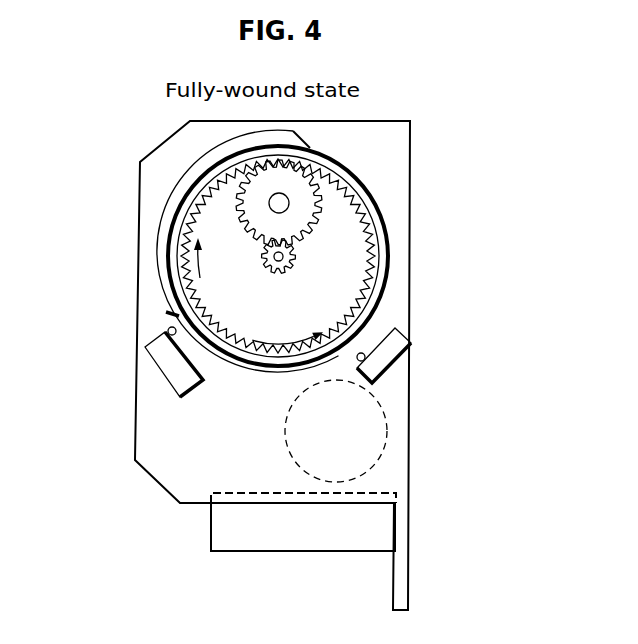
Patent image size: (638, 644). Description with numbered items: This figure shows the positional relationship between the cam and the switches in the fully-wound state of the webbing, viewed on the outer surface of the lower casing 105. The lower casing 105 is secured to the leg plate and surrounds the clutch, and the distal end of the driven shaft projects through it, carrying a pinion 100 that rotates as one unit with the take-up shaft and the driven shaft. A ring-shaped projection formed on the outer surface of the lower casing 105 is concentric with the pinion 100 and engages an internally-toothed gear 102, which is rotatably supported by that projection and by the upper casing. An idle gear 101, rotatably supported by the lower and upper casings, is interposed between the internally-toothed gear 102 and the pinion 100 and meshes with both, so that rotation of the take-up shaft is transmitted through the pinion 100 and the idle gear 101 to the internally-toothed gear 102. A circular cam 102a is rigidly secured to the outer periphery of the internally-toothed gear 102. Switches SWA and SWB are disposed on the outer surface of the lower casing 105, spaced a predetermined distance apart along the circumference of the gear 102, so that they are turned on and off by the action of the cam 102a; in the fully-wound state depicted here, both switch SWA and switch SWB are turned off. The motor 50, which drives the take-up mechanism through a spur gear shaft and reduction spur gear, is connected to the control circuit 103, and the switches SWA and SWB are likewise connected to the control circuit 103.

The internally-toothed gear 102 is at (339, 171).
The circular cam 102a is at (158, 238).
The idle gear 101 is at (307, 195).
The pinion 100 is at (300, 257).
The lower casing 105 is at (410, 289).
The switch SWB is at (165, 363).
The switch SWA is at (392, 355).
The motor 50 is at (378, 460).
The control circuit 103 is at (306, 540).